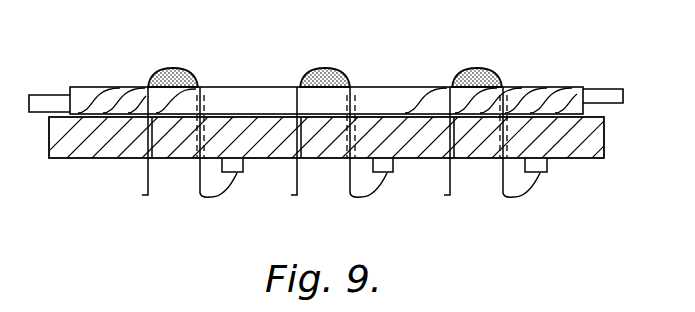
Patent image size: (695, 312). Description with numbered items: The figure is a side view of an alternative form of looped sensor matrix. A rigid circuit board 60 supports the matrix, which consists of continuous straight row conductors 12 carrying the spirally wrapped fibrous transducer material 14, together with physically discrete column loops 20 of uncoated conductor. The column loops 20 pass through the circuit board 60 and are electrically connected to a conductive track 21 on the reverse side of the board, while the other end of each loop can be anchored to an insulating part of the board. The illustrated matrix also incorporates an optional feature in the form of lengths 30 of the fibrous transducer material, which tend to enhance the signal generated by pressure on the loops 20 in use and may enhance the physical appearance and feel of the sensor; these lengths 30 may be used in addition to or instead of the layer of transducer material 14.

The row conductor 12 is at (622, 90).
The fibrous transducer material 14 is at (560, 88).
The column loop 20 is at (520, 46).
The conductive track 21 is at (241, 166).
The length of fibrous transducer material 30 is at (477, 28).
The rigid circuit board 60 is at (605, 127).